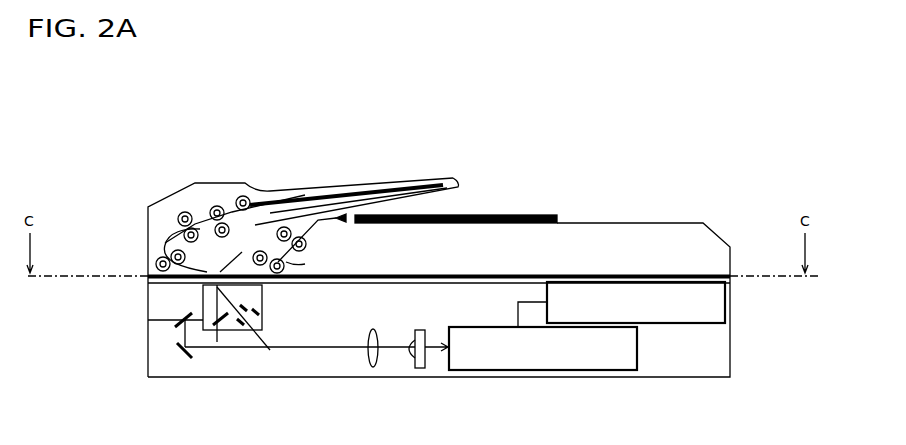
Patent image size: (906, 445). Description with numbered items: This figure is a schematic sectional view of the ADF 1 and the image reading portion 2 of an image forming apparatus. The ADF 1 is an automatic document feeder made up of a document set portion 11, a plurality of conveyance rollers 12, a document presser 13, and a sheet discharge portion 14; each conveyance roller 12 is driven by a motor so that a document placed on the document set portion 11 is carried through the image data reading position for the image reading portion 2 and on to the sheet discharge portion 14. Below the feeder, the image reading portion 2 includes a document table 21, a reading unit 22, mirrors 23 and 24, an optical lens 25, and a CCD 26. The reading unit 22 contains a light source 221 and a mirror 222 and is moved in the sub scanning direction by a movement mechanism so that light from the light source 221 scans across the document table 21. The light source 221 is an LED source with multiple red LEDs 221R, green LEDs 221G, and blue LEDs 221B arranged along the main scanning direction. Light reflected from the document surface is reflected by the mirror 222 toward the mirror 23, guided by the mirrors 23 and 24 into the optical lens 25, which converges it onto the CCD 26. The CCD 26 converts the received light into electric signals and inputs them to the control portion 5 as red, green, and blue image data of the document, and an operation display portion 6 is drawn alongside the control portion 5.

The ADF 1 is at (148, 228).
The image reading portion 2 is at (150, 333).
The control portion 5 is at (477, 327).
The operation display portion 6 is at (732, 302).
The document set portion 11 is at (296, 190).
The conveyance rollers 12 is at (148, 269).
The document presser 13 is at (218, 268).
The sheet discharge portion 14 is at (570, 221).
The document table 21 is at (397, 284).
The reading unit 22 is at (202, 285).
The light source 221 is at (263, 303).
The blue LEDs 221B is at (260, 310).
The green LEDs 221G is at (258, 320).
The red LEDs 221R is at (273, 348).
The mirror 222 is at (217, 342).
The mirror 23 is at (148, 320).
The mirror 24 is at (183, 353).
The optical lens 25 is at (373, 369).
The CCD 26 is at (420, 368).